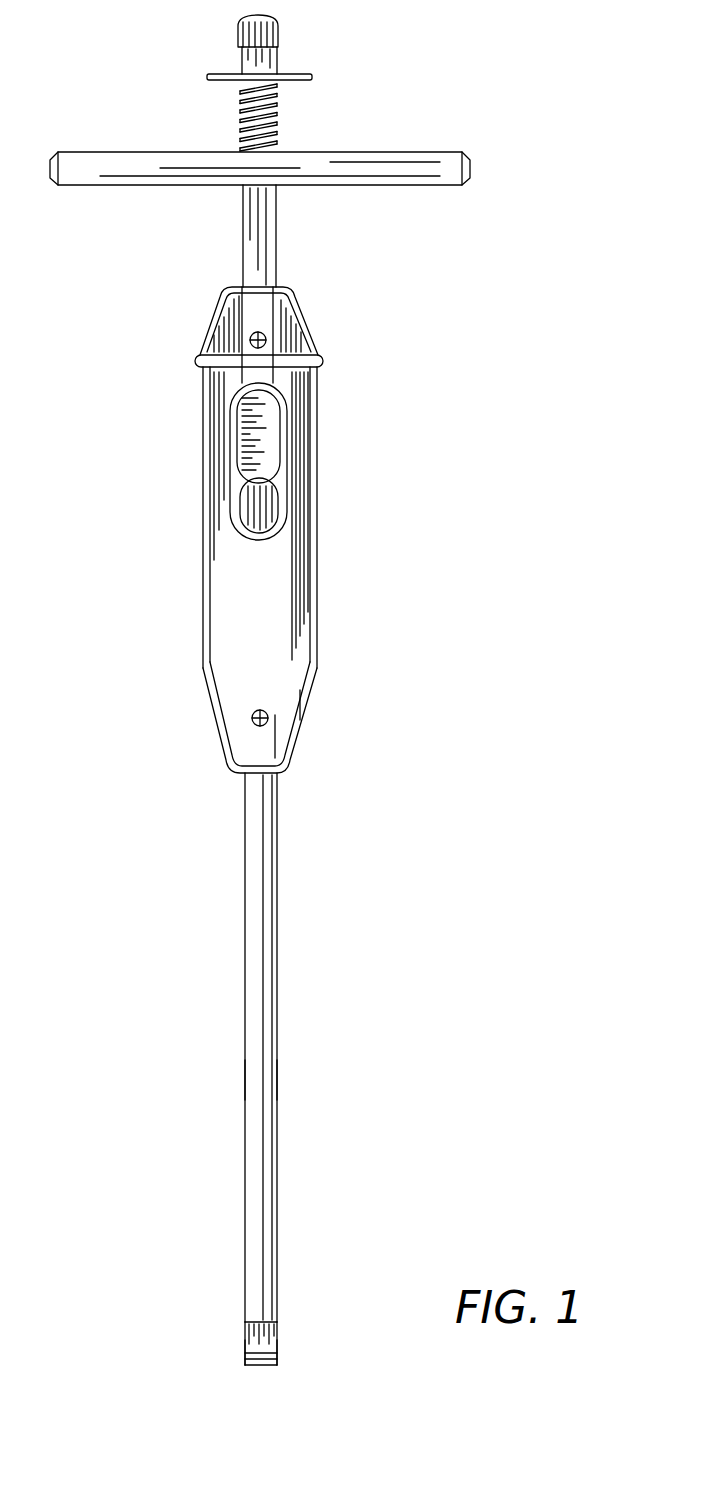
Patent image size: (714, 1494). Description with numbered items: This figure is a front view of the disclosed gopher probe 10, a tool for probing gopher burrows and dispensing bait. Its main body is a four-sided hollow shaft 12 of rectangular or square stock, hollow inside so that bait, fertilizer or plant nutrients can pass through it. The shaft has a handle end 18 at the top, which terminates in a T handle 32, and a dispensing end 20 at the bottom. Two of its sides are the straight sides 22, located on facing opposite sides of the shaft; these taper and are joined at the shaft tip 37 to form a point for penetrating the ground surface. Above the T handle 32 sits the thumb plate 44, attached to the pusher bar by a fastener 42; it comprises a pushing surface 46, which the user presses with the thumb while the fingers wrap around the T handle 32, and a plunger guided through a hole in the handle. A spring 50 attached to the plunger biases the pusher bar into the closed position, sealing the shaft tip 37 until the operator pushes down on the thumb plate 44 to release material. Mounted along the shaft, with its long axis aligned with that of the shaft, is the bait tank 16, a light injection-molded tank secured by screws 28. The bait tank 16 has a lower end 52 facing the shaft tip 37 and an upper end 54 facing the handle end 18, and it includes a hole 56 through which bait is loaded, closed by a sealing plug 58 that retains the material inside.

The gopher probe 10 is at (505, 74).
The four-sided hollow shaft 12 is at (290, 1069).
The bait tank 16 is at (283, 539).
The handle end 18 is at (243, 222).
The dispensing end 20 is at (245, 1337).
The straight sides 22 is at (245, 1078).
The screws 28 is at (262, 335).
The T handle 32 is at (475, 166).
The shaft tip 37 is at (288, 1342).
The fastener 42 is at (280, 18).
The thumb plate 44 is at (322, 77).
The pushing surface 46 is at (222, 74).
The spring 50 is at (240, 140).
The lower end 52 is at (228, 750).
The upper end 54 is at (208, 330).
The hole 56 is at (275, 434).
The sealing plug 58 is at (287, 515).